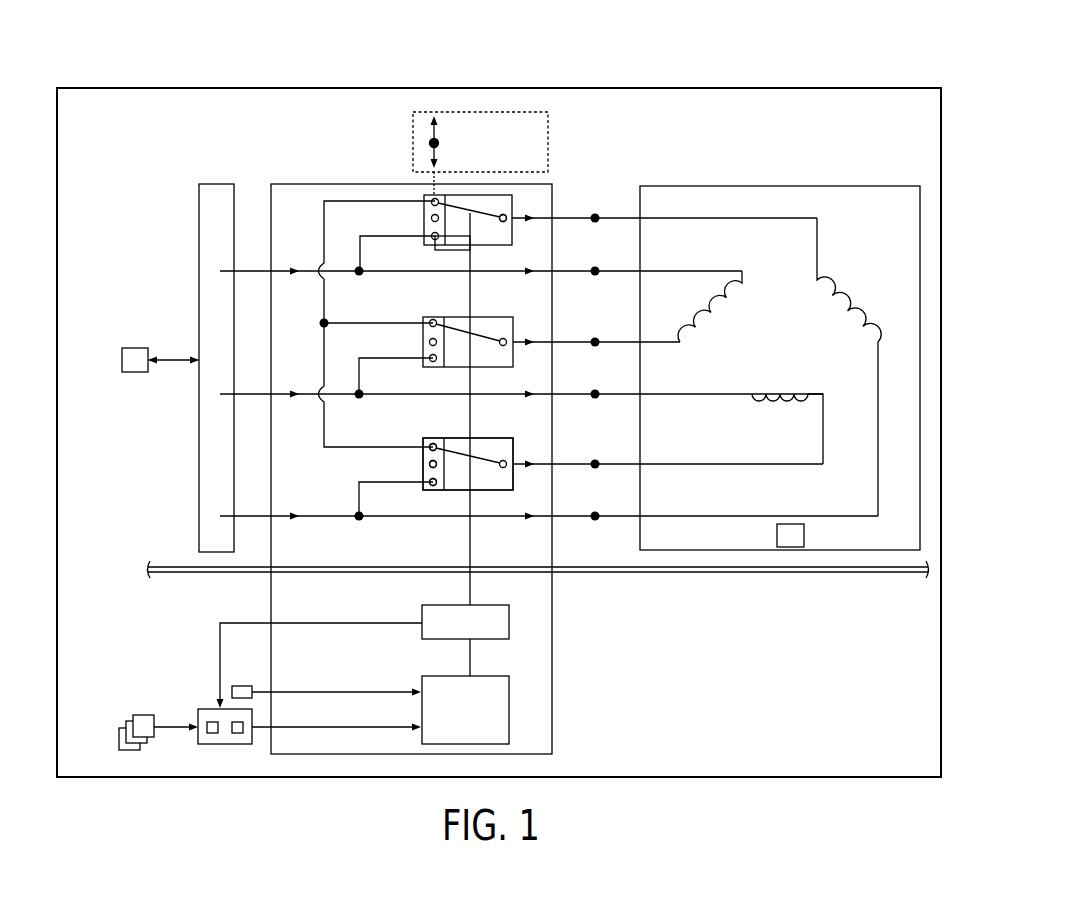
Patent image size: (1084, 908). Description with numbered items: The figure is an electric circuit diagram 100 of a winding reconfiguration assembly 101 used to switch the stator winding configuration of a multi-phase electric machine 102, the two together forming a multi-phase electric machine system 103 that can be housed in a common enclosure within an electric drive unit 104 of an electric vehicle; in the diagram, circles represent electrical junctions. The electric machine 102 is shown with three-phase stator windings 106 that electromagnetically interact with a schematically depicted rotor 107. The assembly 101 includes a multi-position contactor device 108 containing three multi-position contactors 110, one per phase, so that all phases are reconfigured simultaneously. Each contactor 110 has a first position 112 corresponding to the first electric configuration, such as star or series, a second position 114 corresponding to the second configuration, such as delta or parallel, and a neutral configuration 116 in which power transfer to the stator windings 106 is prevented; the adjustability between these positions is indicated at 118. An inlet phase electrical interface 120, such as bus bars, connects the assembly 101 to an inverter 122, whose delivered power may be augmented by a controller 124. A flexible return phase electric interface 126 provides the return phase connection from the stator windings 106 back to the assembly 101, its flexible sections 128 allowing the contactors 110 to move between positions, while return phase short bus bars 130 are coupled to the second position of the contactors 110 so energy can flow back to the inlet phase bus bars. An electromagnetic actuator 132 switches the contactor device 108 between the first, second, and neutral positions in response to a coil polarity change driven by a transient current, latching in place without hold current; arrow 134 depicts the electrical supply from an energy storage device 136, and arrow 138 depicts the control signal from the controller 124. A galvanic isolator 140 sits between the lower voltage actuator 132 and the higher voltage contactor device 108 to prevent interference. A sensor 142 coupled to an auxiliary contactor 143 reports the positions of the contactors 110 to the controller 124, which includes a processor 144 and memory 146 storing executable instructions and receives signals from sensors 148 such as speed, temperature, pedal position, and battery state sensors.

The electric circuit diagram 100 is at (153, 166).
The winding reconfiguration assembly 101 is at (276, 184).
The multi-phase electric machine 102 is at (652, 186).
The multi-phase electric machine system 103 is at (97, 129).
The electric drive unit 104 is at (62, 88).
The stator windings 106 is at (864, 279).
The rotor 107 is at (777, 536).
The multi-position contactor device 108 is at (416, 503).
The multi-position contactors 110 is at (428, 198).
The first position 112 is at (424, 448).
The second position 114 is at (440, 482).
The neutral configuration 116 is at (425, 466).
The contactor adjustability 118 is at (412, 150).
The inlet phase electrical interface 120 is at (199, 215).
The inverter 122 is at (135, 348).
The controller 124 is at (207, 709).
The flexible return phase electric interface 126 is at (601, 209).
The flexible sections 128 is at (508, 209).
The return phase short bus bars 130 is at (391, 233).
The electromagnetic actuator 132 is at (442, 676).
The electrical supply connection 134 is at (328, 692).
The energy storage device 136 is at (240, 686).
The control signal 138 is at (348, 727).
The galvanic isolator 140 is at (172, 567).
The sensor 142 is at (424, 606).
The auxiliary contactor 143 is at (432, 245).
The processor 144 is at (212, 734).
The memory 146 is at (240, 734).
The sensors 148 is at (115, 716).